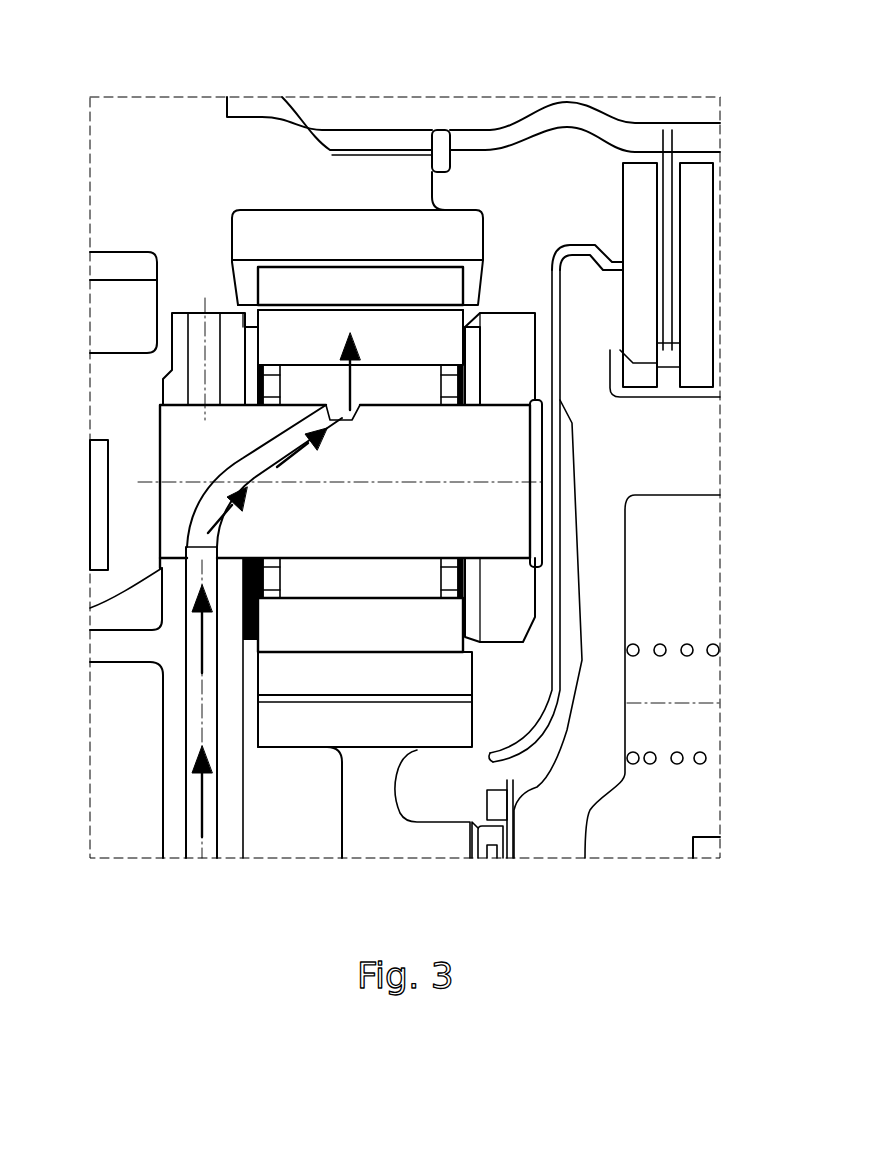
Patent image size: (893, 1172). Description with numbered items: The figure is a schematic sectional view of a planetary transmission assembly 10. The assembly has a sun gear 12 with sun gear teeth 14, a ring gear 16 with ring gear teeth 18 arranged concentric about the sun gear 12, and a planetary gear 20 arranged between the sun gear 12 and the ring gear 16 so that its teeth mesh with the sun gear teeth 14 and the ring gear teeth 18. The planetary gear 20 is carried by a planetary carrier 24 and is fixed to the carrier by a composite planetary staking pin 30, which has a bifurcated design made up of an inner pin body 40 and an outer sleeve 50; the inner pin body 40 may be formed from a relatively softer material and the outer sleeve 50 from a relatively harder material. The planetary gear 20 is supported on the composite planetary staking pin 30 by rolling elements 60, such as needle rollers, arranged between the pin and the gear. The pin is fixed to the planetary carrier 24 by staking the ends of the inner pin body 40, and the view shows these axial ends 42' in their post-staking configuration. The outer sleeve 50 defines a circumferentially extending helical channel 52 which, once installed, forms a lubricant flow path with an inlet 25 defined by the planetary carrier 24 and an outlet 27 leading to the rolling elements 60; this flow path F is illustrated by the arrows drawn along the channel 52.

The planetary transmission assembly 10 is at (196, 215).
The sun gear 12 is at (347, 727).
The sun gear teeth 14 is at (310, 677).
The ring gear 16 is at (461, 240).
The ring gear teeth 18 is at (387, 277).
The planetary gear 20 is at (307, 337).
The planetary carrier 24 is at (205, 342).
The inlet 25 is at (190, 560).
The outlet 27 is at (360, 410).
The composite planetary staking pin 30 is at (510, 500).
The inner pin body 40 is at (533, 460).
The axial ends 42' is at (661, 629).
The outer sleeve 50 is at (510, 457).
The helical channel 52 is at (257, 480).
The rolling elements 60 is at (393, 583).
The flow path F is at (290, 460).